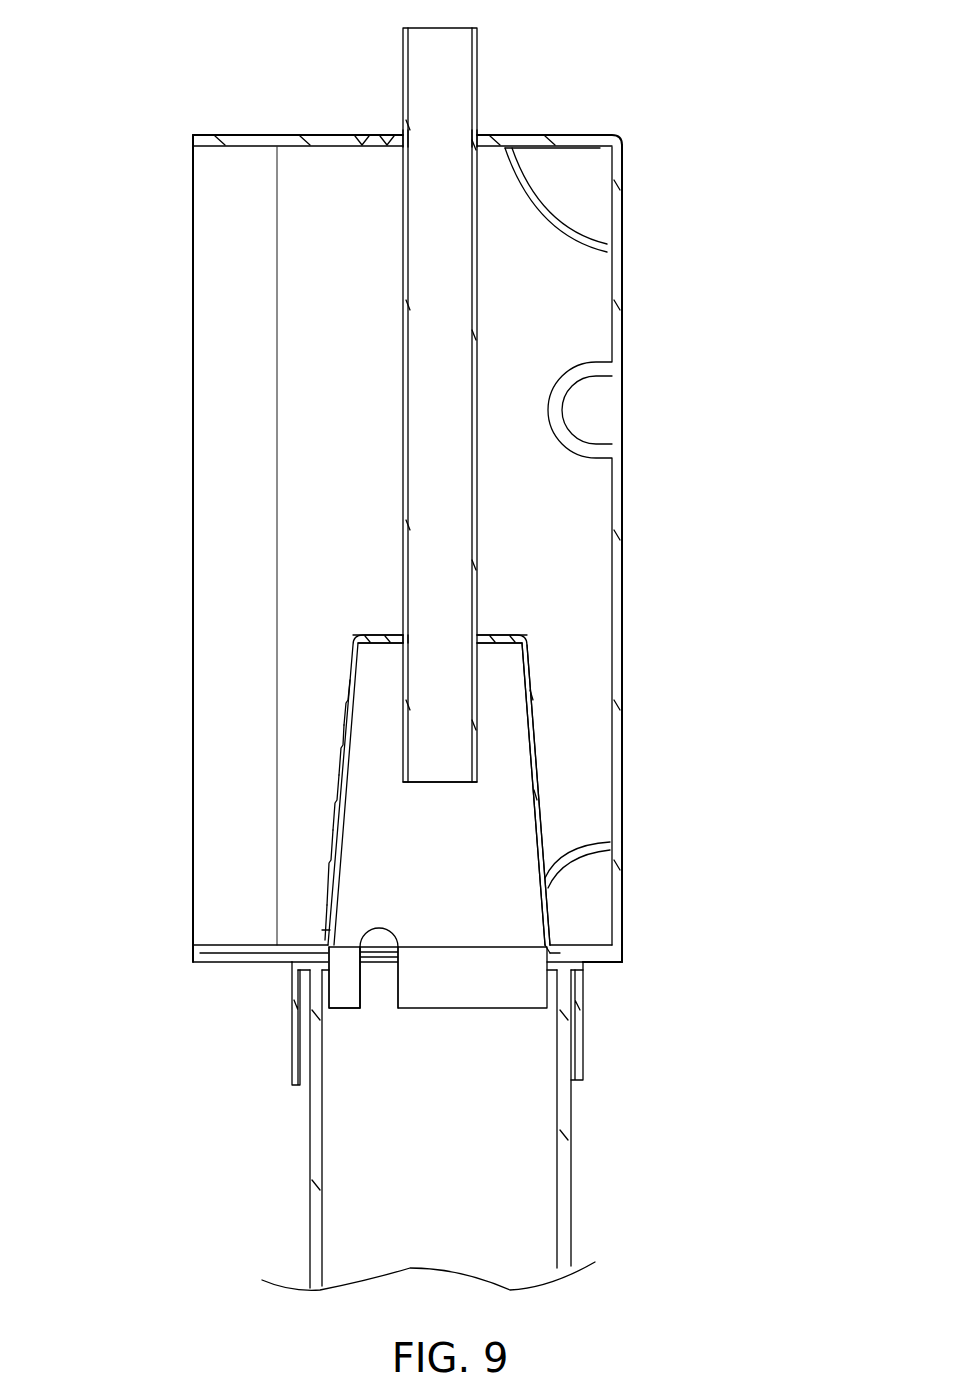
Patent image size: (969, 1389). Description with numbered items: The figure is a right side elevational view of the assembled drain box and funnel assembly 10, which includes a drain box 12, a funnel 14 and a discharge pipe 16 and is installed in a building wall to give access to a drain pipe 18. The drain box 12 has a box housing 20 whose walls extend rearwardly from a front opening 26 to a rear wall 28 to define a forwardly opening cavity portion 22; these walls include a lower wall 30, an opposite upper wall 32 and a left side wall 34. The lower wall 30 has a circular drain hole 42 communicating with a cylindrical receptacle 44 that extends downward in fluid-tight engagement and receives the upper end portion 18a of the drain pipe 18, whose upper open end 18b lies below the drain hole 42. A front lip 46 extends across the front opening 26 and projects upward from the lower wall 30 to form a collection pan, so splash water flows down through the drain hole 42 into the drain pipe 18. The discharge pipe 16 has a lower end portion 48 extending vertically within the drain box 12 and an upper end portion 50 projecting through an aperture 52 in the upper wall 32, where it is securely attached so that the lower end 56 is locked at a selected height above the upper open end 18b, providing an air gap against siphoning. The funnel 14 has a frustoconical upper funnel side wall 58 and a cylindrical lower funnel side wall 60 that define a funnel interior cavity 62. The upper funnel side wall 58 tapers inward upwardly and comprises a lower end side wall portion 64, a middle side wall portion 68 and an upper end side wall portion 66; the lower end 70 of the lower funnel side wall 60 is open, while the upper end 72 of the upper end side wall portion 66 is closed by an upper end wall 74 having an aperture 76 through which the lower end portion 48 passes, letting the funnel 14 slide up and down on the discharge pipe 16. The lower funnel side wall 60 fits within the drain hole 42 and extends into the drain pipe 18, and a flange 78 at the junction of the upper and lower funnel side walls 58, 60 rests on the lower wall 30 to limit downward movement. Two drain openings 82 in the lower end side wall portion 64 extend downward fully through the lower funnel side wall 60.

The drain box and funnel assembly 10 is at (714, 73).
The drain box 12 is at (620, 215).
The funnel 14 is at (540, 733).
The discharge pipe 16 is at (480, 315).
The drain pipe 18 is at (572, 1176).
The upper end portion 18a is at (563, 1140).
The upper open end 18b is at (567, 978).
The box housing 20 is at (622, 662).
The cavity portion 22 is at (300, 640).
The front opening 26 is at (192, 556).
The rear wall 28 is at (620, 552).
The lower wall 30 is at (240, 953).
The upper wall 32 is at (548, 134).
The left side wall 34 is at (364, 408).
The drain hole 42 is at (375, 975).
The receptacle 44 is at (577, 1020).
The front lip 46 is at (318, 930).
The lower end portion 48 is at (446, 490).
The upper end portion 50 is at (455, 68).
The aperture 52 is at (413, 132).
The lower end 56 is at (455, 785).
The upper funnel side wall 58 is at (345, 690).
The lower funnel side wall 60 is at (430, 985).
The funnel interior cavity 62 is at (363, 828).
The lower end side wall portion 64 is at (330, 890).
The upper end side wall portion 66 is at (345, 730).
The middle side wall portion 68 is at (338, 803).
The lower end 70 is at (452, 1012).
The upper end 72 is at (385, 634).
The upper end wall 74 is at (490, 634).
The aperture 76 is at (412, 634).
The flange 78 is at (557, 947).
The drain openings 82 is at (372, 945).